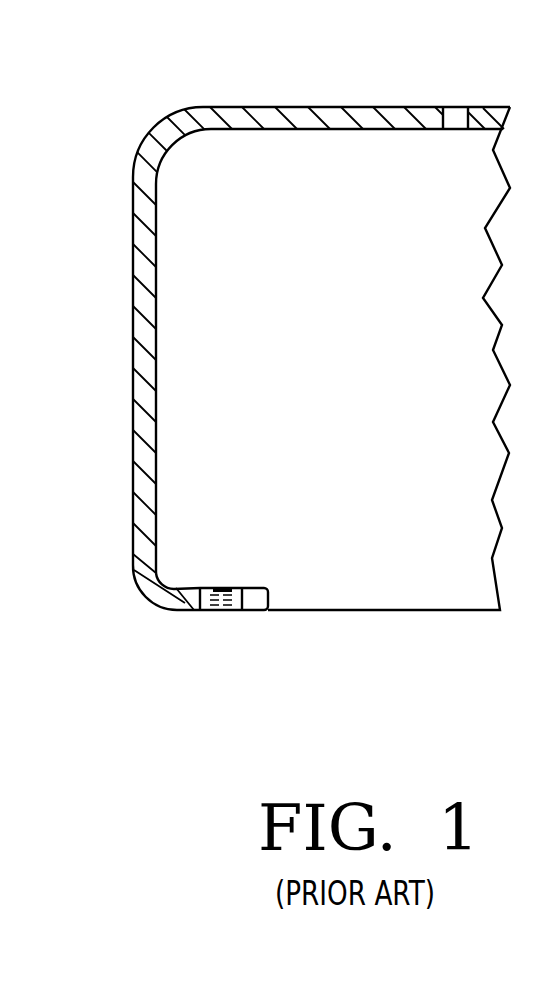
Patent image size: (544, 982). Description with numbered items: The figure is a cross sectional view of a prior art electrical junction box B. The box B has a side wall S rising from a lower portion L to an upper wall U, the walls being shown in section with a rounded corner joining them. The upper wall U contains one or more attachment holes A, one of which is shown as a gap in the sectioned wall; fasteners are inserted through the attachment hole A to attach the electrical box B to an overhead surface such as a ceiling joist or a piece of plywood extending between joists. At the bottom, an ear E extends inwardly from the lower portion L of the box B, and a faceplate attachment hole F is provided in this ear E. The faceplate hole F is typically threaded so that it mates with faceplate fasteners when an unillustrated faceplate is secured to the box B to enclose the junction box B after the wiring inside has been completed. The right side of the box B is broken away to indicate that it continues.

The attachment hole A is at (455, 122).
The upper wall U is at (342, 132).
The side wall S is at (133, 237).
The electrical box B is at (347, 355).
The ear E is at (255, 588).
The lower portion L is at (148, 601).
The faceplate attachment hole F is at (225, 612).